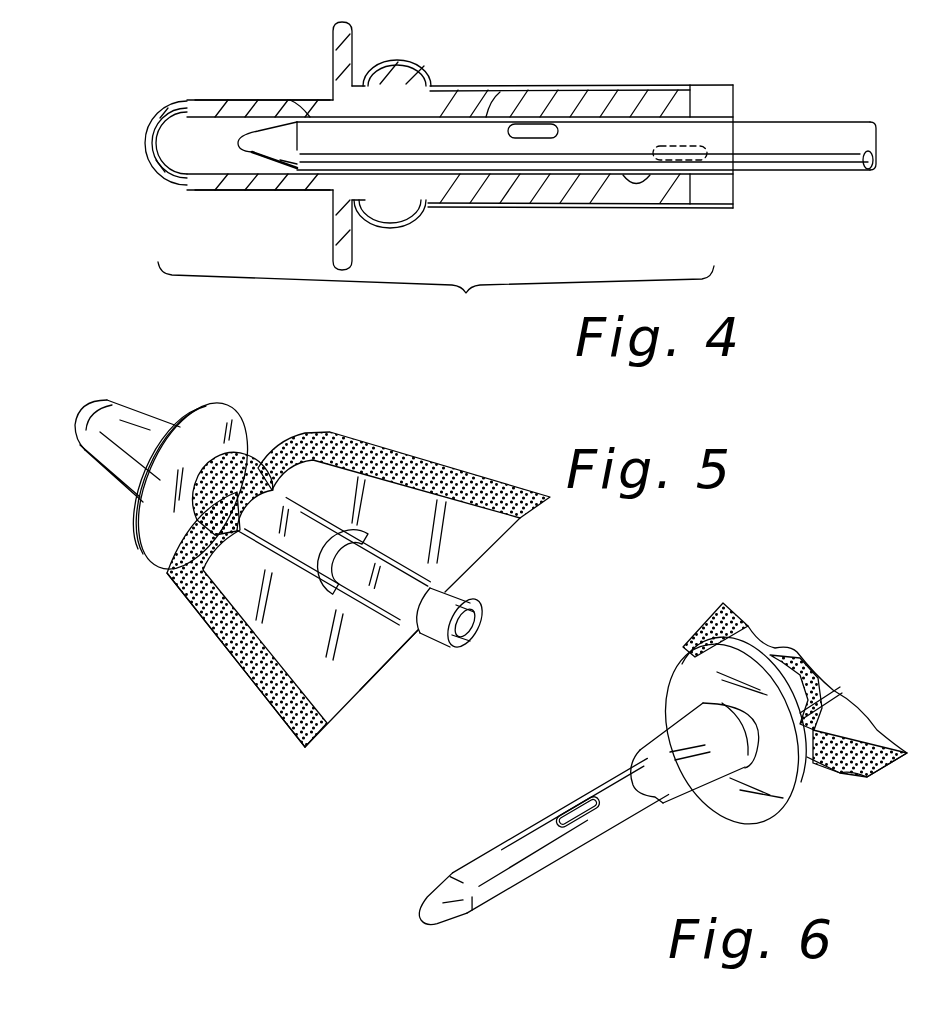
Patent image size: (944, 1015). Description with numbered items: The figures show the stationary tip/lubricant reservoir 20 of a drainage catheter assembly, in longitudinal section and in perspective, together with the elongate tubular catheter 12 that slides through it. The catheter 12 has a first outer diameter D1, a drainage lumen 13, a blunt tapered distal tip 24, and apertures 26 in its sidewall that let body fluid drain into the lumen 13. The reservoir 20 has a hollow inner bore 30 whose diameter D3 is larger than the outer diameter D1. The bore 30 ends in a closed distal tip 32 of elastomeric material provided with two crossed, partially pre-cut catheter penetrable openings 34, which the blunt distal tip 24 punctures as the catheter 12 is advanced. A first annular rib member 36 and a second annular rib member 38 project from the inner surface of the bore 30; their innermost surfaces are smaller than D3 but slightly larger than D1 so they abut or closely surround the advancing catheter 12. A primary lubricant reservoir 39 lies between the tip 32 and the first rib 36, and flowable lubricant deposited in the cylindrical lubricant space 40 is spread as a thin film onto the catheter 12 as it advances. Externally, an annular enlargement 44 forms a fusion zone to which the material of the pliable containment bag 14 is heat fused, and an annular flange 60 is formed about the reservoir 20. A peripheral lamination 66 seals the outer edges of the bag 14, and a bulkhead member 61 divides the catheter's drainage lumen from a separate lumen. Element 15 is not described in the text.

In FIG. 4, the elongate tubular catheter 12 is at (815, 128).
In FIG. 5, the elongate tubular catheter 12 is at (465, 597).
In FIG. 6, the elongate tubular catheter 12 is at (517, 843).
In FIG. 5, the lumen 13 is at (480, 633).
In FIG. 4, the pliable plastic containment bag 14 is at (690, 83).
In FIG. 5, the pliable plastic containment bag 14 is at (477, 543).
In FIG. 6, the pliable plastic containment bag 14 is at (795, 690).
In FIG. 4, the slit 15 is at (725, 188).
In FIG. 5, the slit 15 is at (400, 673).
In FIG. 4, the tip/lubricant reservoir 20 is at (436, 298).
In FIG. 4, the blunt tapered distal tip 24 is at (250, 143).
In FIG. 6, the blunt tapered distal tip 24 is at (447, 915).
In FIG. 4, the apertures 26 is at (543, 123).
In FIG. 5, the apertures 26 is at (336, 556).
In FIG. 6, the apertures 26 is at (572, 807).
In FIG. 4, the hollow inner bore 30 is at (200, 133).
In FIG. 4, the closed distal tip 32 is at (148, 163).
In FIG. 5, the closed distal tip 32 is at (85, 407).
In FIG. 5, the catheter penetrable openings 34 is at (100, 403).
In FIG. 6, the catheter penetrable openings 34 is at (636, 752).
In FIG. 4, the first annular rib member 36 is at (345, 112).
In FIG. 4, the second annular rib member 38 is at (497, 115).
In FIG. 4, the primary lubricant reservoir 39 is at (205, 160).
In FIG. 4, the cylindrical lubricant space 40 is at (460, 175).
In FIG. 4, the annular enlargement 44 is at (400, 60).
In FIG. 5, the annular enlargement 44 is at (268, 452).
In FIG. 4, the annular flange 60 is at (352, 33).
In FIG. 5, the annular flange 60 is at (250, 425).
In FIG. 6, the bulkhead member 61 is at (785, 778).
In FIG. 5, the peripheral lamination 66 is at (277, 697).
In FIG. 4, the first outer diameter D1 is at (187, 120).
In FIG. 4, the inner bore diameter D3 is at (155, 113).